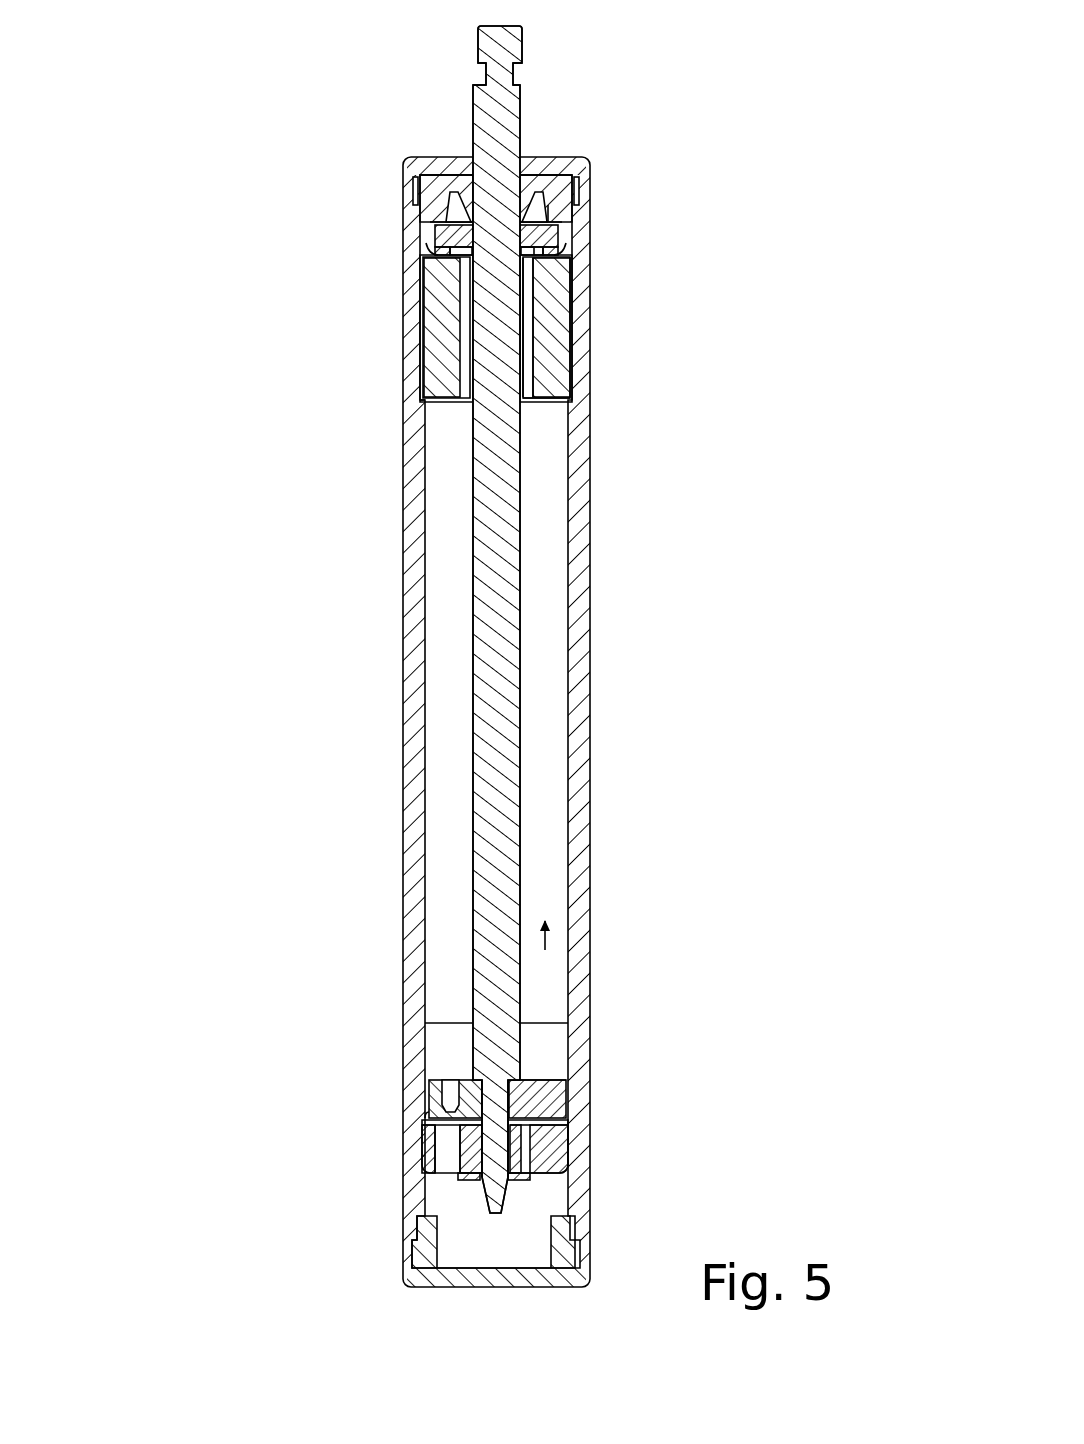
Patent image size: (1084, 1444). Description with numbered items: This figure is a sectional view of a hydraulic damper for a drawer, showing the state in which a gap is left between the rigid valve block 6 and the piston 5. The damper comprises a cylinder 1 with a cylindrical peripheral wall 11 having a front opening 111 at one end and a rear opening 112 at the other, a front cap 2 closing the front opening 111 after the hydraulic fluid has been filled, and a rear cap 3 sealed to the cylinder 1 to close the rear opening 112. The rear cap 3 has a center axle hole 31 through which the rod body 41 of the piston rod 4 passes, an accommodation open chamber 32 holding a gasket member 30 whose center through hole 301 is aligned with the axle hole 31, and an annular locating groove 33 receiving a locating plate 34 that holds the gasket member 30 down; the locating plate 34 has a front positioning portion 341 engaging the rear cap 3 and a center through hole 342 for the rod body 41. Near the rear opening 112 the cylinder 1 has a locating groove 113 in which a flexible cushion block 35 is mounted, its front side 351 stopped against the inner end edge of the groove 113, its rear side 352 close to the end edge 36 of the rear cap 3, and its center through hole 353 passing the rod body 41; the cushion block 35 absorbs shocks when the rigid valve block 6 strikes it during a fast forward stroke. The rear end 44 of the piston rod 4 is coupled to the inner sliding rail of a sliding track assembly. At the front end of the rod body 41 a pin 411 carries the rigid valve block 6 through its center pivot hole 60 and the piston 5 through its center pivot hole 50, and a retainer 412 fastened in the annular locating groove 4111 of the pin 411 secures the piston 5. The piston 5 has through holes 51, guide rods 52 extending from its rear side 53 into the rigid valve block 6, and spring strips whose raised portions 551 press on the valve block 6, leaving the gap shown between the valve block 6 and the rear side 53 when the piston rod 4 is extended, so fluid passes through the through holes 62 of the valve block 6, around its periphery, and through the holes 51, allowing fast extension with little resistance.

The cylinder 1 is at (386, 655).
The front cap 2 is at (396, 1292).
The rear cap 3 is at (573, 148).
The piston rod 4 is at (462, 770).
The piston 5 is at (582, 1165).
The rigid valve block 6 is at (553, 1069).
The cylindrical peripheral wall 11 is at (421, 510).
The gasket member 30 is at (582, 180).
The center axle hole 31 is at (473, 162).
The accommodation open chamber 32 is at (445, 187).
The annular locating groove 33 is at (438, 227).
The locating plate 34 is at (558, 232).
The cushion block 35 is at (574, 345).
The end edge 36 is at (436, 251).
The rod body 41 is at (476, 100).
The rear end 44 is at (486, 71).
The center pivot hole 50 is at (520, 1145).
The through holes 51 is at (447, 1160).
The guide rods 52 is at (424, 1114).
The rear side 53 is at (424, 1118).
The center pivot hole 60 is at (556, 1077).
The through holes 62 is at (454, 1090).
The front opening 111 is at (412, 1245).
The rear opening 112 is at (413, 187).
The locating groove 113 is at (423, 404).
The center through hole 301 is at (548, 208).
The front positioning portion 341 is at (440, 262).
The center through hole 342 is at (556, 248).
The front side 351 is at (550, 415).
The rear side 352 is at (527, 280).
The center through hole 353 is at (527, 355).
The pin 411 is at (497, 1135).
The retainer 412 is at (527, 1178).
The annular locating groove 4111 is at (500, 1181).
The raised portion 551 is at (440, 1130).